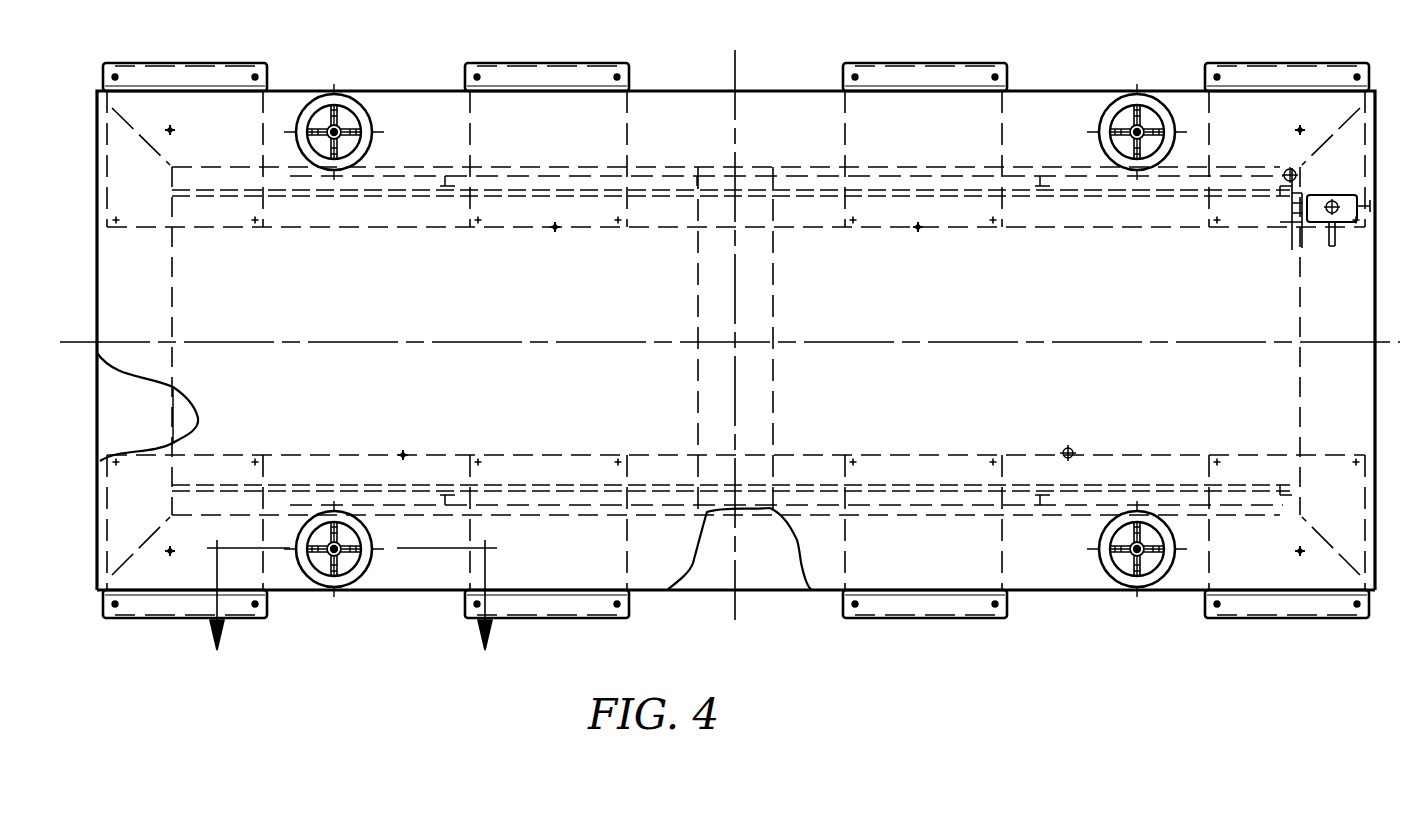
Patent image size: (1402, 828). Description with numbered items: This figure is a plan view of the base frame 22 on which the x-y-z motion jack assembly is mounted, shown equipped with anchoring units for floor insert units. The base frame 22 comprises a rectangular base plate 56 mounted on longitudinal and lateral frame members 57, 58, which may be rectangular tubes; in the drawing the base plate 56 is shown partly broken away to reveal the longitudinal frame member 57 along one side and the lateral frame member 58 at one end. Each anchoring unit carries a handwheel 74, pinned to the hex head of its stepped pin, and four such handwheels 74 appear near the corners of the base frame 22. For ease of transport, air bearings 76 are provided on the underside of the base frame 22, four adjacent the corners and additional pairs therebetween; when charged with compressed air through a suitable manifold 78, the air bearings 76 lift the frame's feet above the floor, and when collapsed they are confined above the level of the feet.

The base frame 22 is at (697, 84).
The air bearings 76 is at (215, 63).
The handwheel 74 is at (364, 120).
The manifold 78 is at (1348, 204).
The lateral frame member 58 is at (127, 406).
The longitudinal frame member 57 is at (710, 583).
The base plate 56 is at (388, 578).